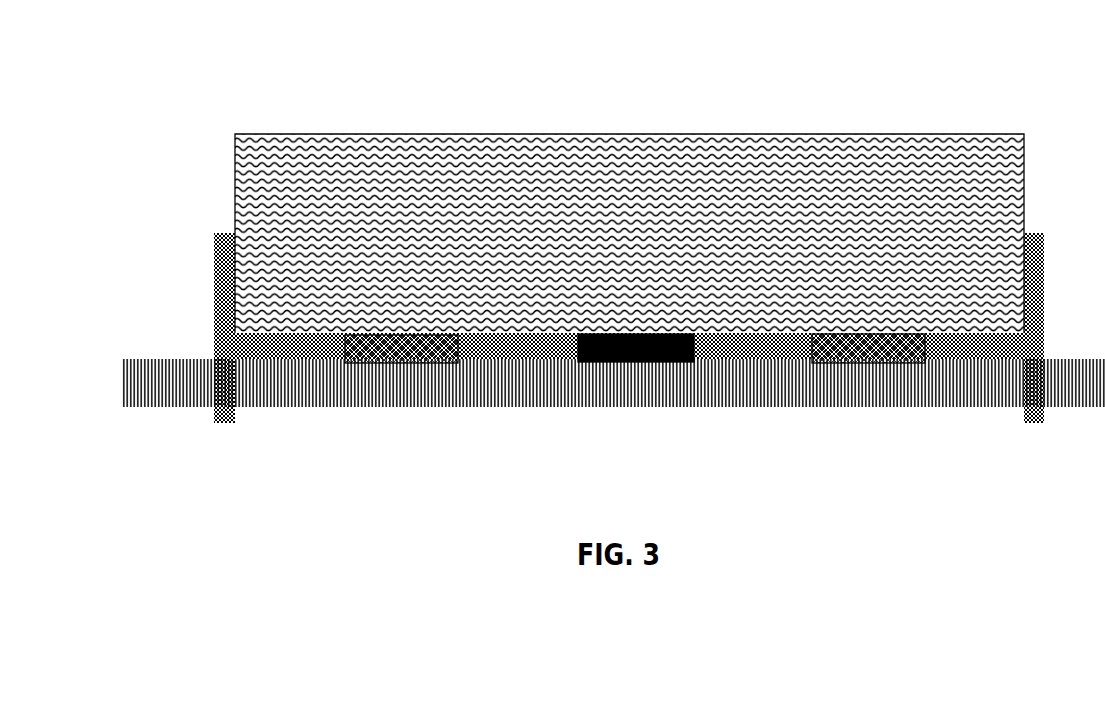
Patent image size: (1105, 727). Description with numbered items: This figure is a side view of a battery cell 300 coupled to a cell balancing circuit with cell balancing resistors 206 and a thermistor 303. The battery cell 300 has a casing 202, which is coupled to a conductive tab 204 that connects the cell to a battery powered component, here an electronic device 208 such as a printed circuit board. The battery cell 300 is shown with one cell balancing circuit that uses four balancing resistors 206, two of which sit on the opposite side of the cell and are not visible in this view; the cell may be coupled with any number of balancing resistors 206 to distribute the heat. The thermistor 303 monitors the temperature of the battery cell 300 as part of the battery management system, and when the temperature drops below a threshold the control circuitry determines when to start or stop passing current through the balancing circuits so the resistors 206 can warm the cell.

The battery cell 300 is at (613, 249).
The casing 202 is at (638, 248).
The conductive tab 204 is at (214, 330).
The cell balancing resistors 206 is at (395, 365).
The electronic device 208 is at (544, 395).
The thermistor 303 is at (630, 363).